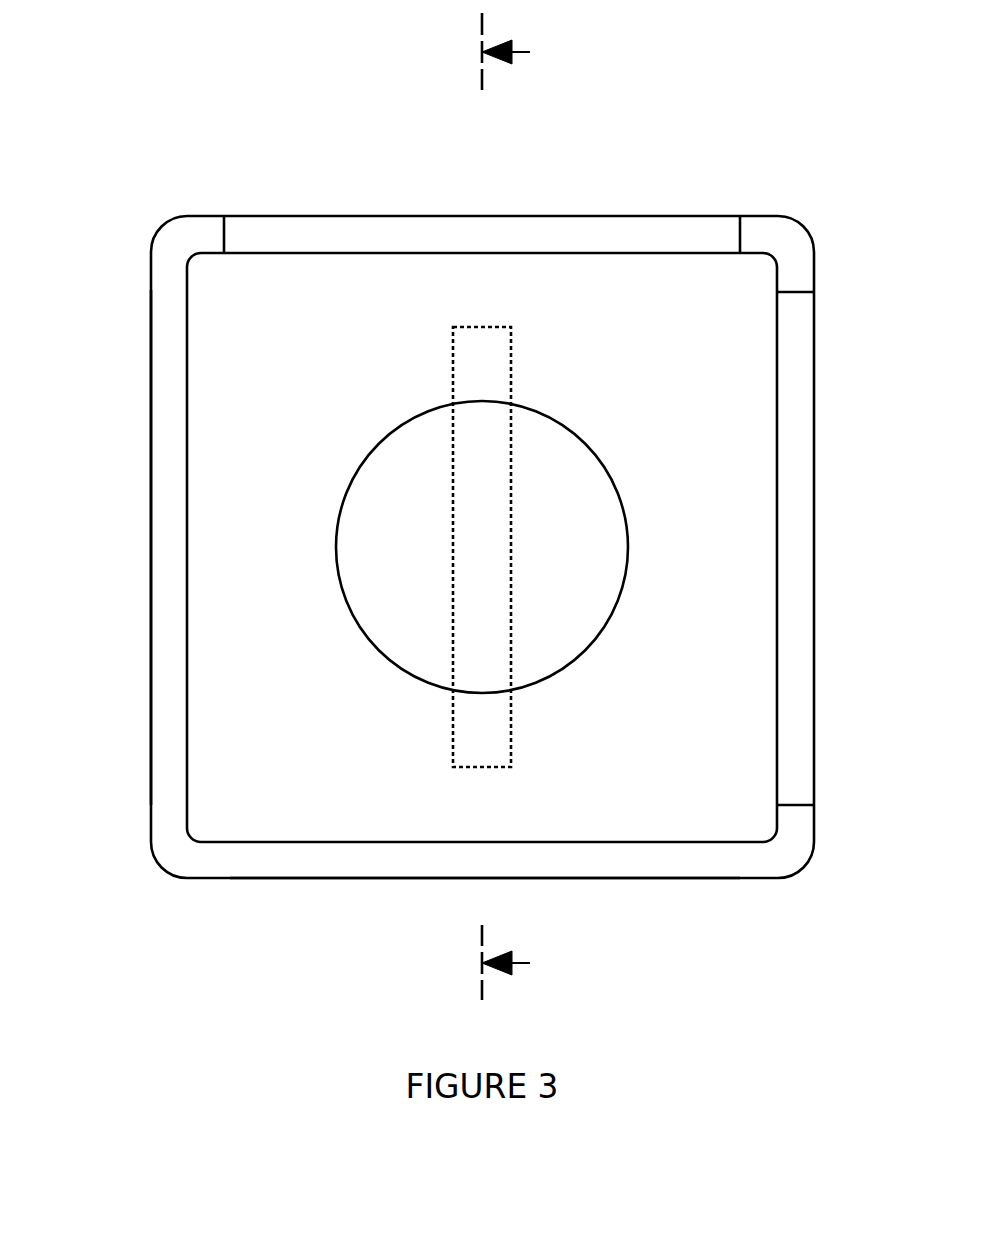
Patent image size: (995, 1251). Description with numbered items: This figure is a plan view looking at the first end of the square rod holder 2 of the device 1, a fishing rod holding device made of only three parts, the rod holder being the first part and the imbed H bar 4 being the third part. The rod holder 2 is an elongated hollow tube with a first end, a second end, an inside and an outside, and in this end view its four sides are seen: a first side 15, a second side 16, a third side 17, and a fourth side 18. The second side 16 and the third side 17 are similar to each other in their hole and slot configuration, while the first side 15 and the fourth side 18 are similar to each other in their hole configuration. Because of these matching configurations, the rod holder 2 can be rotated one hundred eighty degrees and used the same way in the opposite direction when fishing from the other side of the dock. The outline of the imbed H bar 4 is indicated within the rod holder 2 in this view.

The device 1 is at (286, 216).
The rod holder 2 is at (427, 216).
The imbed H bar 4 is at (511, 362).
The first side 15 is at (151, 537).
The second side 16 is at (550, 216).
The third side 17 is at (814, 540).
The fourth side 18 is at (710, 878).